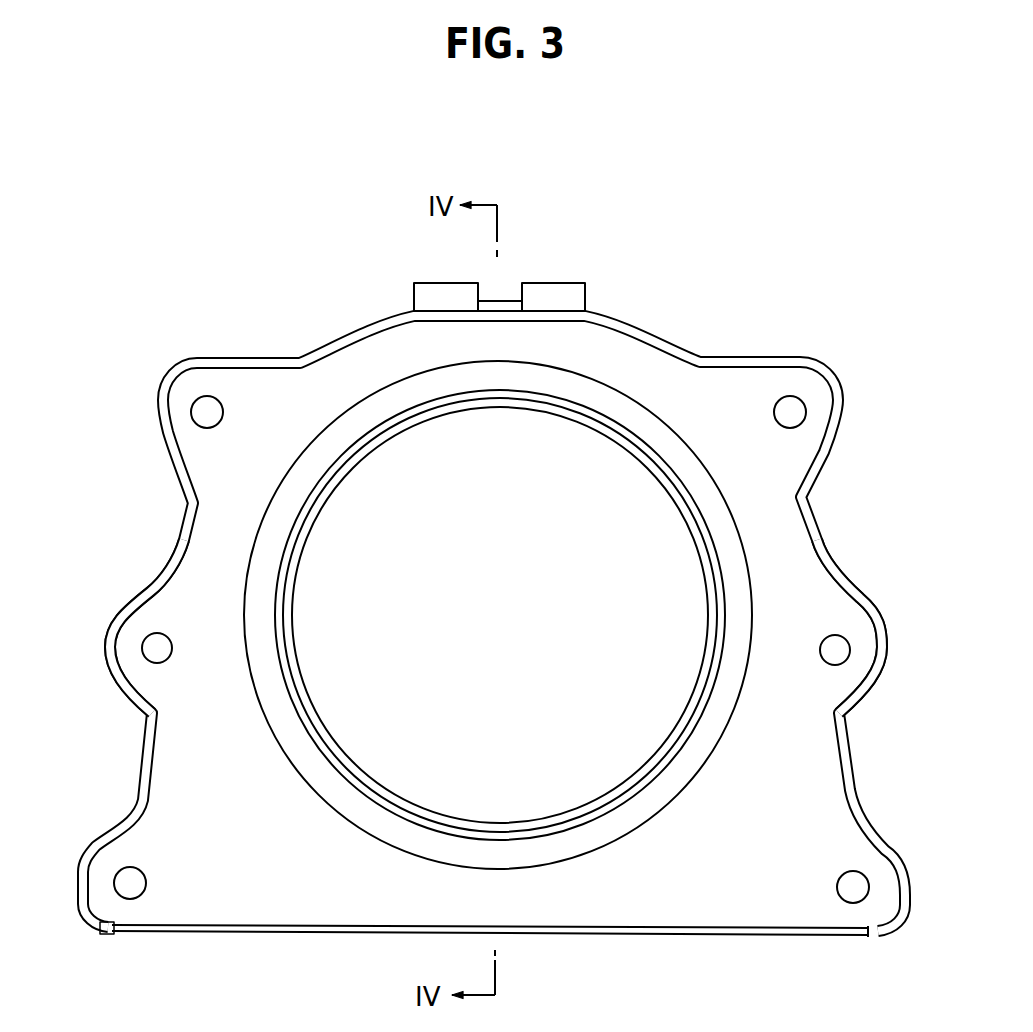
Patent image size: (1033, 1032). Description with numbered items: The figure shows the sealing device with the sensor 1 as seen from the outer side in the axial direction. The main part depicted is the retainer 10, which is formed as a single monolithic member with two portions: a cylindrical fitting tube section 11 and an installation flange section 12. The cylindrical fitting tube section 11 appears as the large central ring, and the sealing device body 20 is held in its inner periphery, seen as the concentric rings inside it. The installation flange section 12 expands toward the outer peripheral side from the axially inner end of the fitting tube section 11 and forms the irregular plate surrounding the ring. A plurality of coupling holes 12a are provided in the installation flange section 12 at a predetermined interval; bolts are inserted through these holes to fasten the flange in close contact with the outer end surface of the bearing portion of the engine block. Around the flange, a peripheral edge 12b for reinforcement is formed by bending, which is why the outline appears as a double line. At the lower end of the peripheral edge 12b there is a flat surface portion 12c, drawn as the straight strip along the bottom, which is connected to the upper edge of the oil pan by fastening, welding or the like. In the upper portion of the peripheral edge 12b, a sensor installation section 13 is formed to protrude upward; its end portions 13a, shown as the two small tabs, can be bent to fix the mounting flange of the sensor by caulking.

The oil seal retainer assembly 1 is at (489, 608).
The retainer 10 is at (489, 608).
The cylindrical fitting tube section 11 is at (388, 405).
The installation flange section 12 is at (258, 396).
The coupling holes 12a is at (205, 412).
The peripheral edge 12b is at (824, 540).
The flat surface portion 12c is at (625, 935).
The sensor installation section 13 is at (503, 306).
The end portion 13a is at (432, 296).
The sealing device body 20 is at (424, 422).